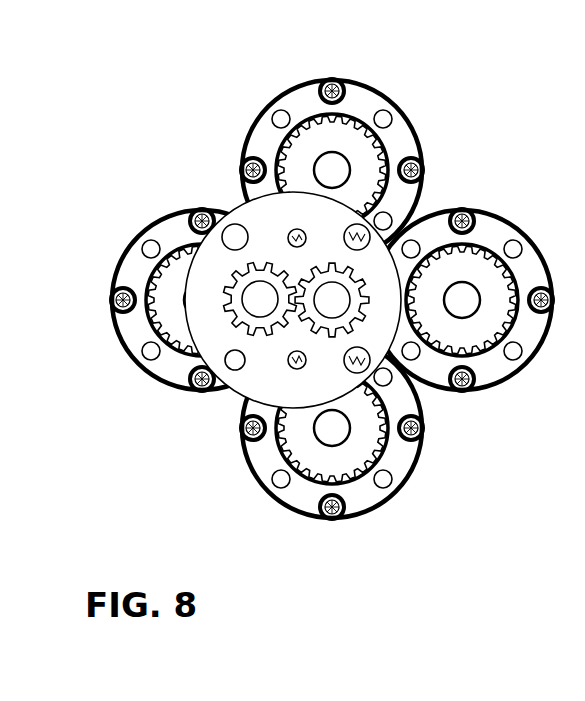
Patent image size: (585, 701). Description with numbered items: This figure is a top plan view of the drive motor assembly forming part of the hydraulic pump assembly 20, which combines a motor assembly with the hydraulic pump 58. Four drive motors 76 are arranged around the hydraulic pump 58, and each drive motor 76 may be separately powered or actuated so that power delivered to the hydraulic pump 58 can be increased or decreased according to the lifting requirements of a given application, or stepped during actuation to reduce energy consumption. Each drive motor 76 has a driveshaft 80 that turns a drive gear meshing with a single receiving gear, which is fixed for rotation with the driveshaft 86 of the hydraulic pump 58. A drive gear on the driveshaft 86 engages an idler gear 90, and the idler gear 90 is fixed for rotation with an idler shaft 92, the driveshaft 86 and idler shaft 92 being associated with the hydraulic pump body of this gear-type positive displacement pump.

The hydraulic pump assembly 20 is at (326, 276).
The drive motor 76 is at (355, 82).
The hydraulic pump 58 is at (388, 220).
The idler gear 90 is at (242, 292).
The idler shaft 92 is at (262, 298).
The driveshaft 80 is at (332, 305).
The driveshaft 86 is at (297, 362).